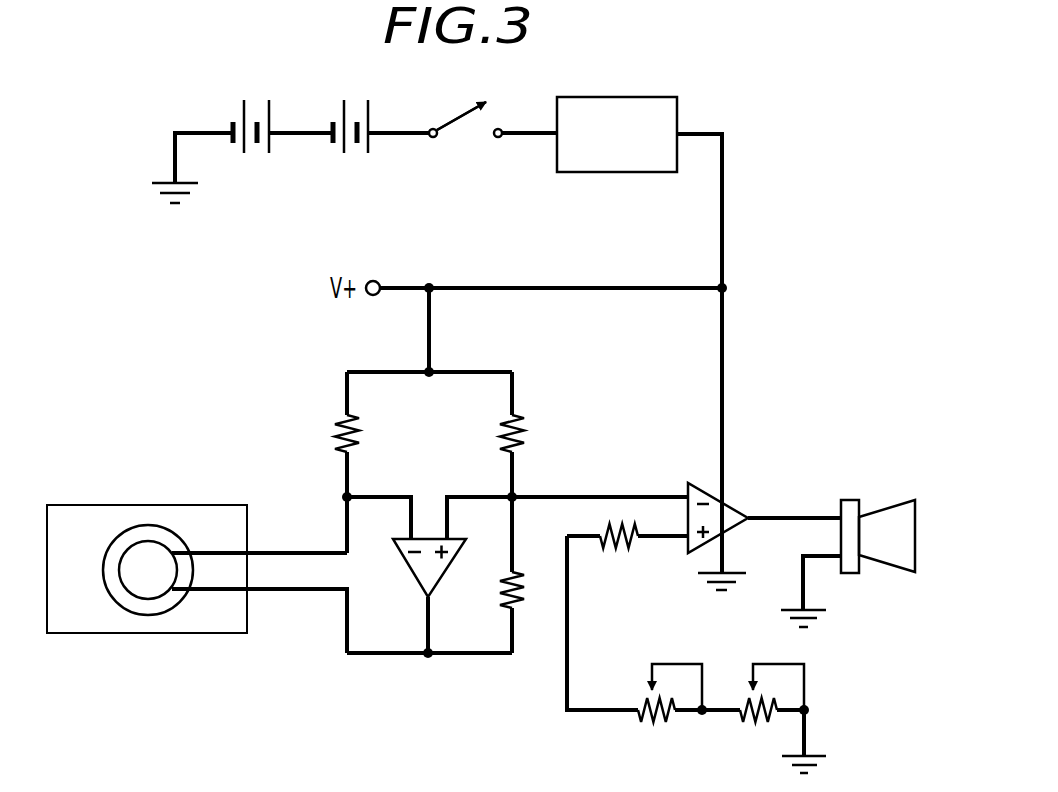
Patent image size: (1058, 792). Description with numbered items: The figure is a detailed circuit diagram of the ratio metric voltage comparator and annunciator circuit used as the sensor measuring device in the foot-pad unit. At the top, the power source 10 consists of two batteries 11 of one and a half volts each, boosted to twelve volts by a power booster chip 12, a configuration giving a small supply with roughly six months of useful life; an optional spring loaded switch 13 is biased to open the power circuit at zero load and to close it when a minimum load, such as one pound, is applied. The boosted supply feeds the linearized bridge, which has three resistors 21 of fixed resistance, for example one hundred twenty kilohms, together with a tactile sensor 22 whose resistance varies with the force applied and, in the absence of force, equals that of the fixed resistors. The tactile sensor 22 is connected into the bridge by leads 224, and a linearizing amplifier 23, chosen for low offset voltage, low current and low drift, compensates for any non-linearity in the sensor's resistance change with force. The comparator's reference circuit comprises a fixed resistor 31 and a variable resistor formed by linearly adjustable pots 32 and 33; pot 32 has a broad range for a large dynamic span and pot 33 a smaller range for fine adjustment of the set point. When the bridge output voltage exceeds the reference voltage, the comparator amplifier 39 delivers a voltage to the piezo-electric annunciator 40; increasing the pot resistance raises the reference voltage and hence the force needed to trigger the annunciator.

The power source 10 is at (460, 140).
The batteries 11 is at (247, 107).
The power booster chip 12 is at (628, 97).
The spring loaded switch 13 is at (455, 114).
The resistors 21 is at (336, 430).
The tactile sensor 22 is at (168, 505).
The linearizing amplifier 23 is at (410, 578).
The fixed resistor 31 is at (615, 548).
The pot 32 is at (645, 720).
The pot resistor 33 is at (748, 720).
The comparator amplifier 39 is at (735, 500).
The annunciator 40 is at (853, 500).
The leads 224 is at (292, 550).